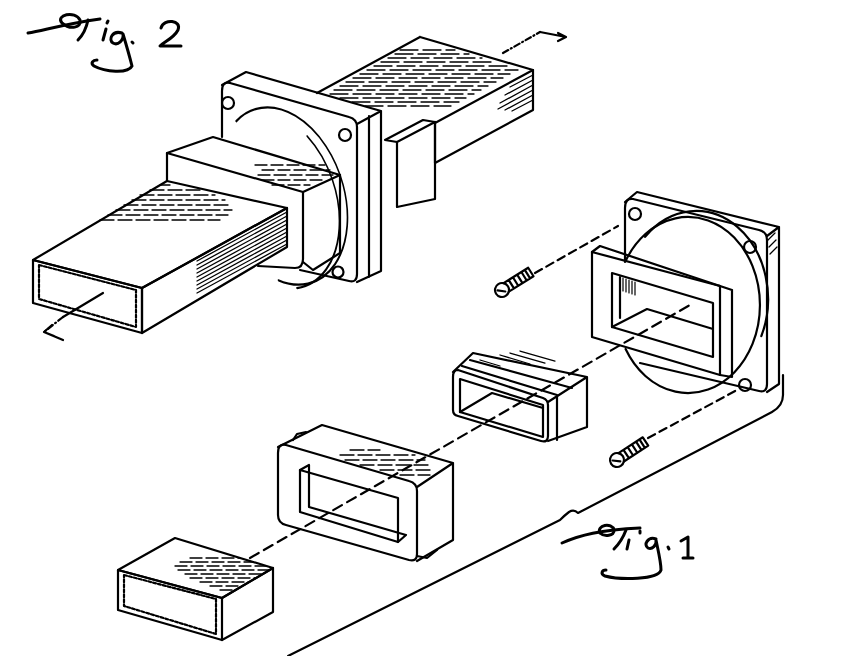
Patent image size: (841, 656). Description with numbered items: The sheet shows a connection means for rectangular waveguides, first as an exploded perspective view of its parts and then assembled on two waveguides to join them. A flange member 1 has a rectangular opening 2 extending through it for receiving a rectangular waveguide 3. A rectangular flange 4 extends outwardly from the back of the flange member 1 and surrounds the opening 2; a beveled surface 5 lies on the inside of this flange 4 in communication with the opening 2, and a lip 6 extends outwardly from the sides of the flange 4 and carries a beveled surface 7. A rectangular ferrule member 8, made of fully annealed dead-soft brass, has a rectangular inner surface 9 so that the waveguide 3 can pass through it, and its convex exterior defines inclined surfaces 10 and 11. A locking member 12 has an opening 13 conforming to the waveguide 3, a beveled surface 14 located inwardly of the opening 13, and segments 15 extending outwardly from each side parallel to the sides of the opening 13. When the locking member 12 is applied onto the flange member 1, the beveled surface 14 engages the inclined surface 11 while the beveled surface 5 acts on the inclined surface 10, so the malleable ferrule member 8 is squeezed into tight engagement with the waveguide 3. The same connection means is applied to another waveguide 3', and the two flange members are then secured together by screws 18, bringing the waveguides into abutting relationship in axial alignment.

In FIG. 2, the flange member 1 is at (258, 95).
In FIG. 1, the flange member 1 is at (698, 212).
In FIG. 1, the rectangular opening 2 is at (640, 303).
In FIG. 2, the rectangular waveguide 3 is at (308, 193).
In FIG. 1, the rectangular waveguide 3 is at (195, 578).
In FIG. 2, the another waveguide 3' is at (429, 100).
In FIG. 1, the rectangular flange 4 is at (692, 277).
In FIG. 1, the beveled surface 5 is at (610, 316).
In FIG. 1, the lip 6 is at (590, 282).
In FIG. 1, the beveled surface 7 is at (647, 354).
In FIG. 1, the rectangular ferrule member 8 is at (484, 353).
In FIG. 1, the inner surface 9 is at (462, 397).
In FIG. 1, the inclined surface 10 is at (502, 352).
In FIG. 1, the inclined surface 11 is at (470, 364).
In FIG. 2, the locking member 12 is at (170, 151).
In FIG. 1, the locking member 12 is at (296, 437).
In FIG. 1, the opening 13 is at (304, 505).
In FIG. 1, the beveled surface 14 is at (303, 483).
In FIG. 2, the segments 15 is at (205, 147).
In FIG. 1, the segments 15 is at (341, 436).
In FIG. 2, the screws 18 is at (222, 104).
In FIG. 1, the screws 18 is at (510, 276).